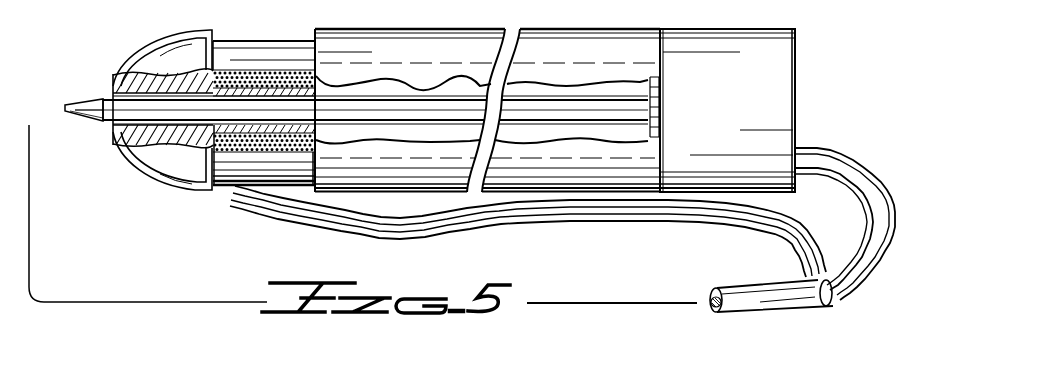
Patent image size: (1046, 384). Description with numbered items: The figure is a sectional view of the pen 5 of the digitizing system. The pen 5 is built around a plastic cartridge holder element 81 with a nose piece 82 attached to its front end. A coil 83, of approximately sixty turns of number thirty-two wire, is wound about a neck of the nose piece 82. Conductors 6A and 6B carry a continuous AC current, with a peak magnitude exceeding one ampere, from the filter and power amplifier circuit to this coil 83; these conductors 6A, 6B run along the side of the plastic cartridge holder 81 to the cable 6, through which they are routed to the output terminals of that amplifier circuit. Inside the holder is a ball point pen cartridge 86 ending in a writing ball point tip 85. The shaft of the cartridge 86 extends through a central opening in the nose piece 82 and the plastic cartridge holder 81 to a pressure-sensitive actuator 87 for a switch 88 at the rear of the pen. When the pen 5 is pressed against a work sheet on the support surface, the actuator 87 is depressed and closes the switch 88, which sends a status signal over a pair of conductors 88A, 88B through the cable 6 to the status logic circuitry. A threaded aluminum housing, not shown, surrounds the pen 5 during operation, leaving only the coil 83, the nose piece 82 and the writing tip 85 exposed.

The pen 5 is at (178, 237).
The cable 6 is at (750, 287).
The conductor 6A is at (556, 208).
The conductor 6B is at (593, 222).
The plastic cartridge holder element 81 is at (591, 29).
The nose piece 82 is at (160, 189).
The coil 83 is at (258, 41).
The writing ball point tip 85 is at (66, 104).
The ball point pen cartridge 86 is at (88, 122).
The actuator 87 is at (661, 108).
The switch 88 is at (725, 29).
The conductor 88A is at (832, 170).
The conductor 88B is at (882, 172).